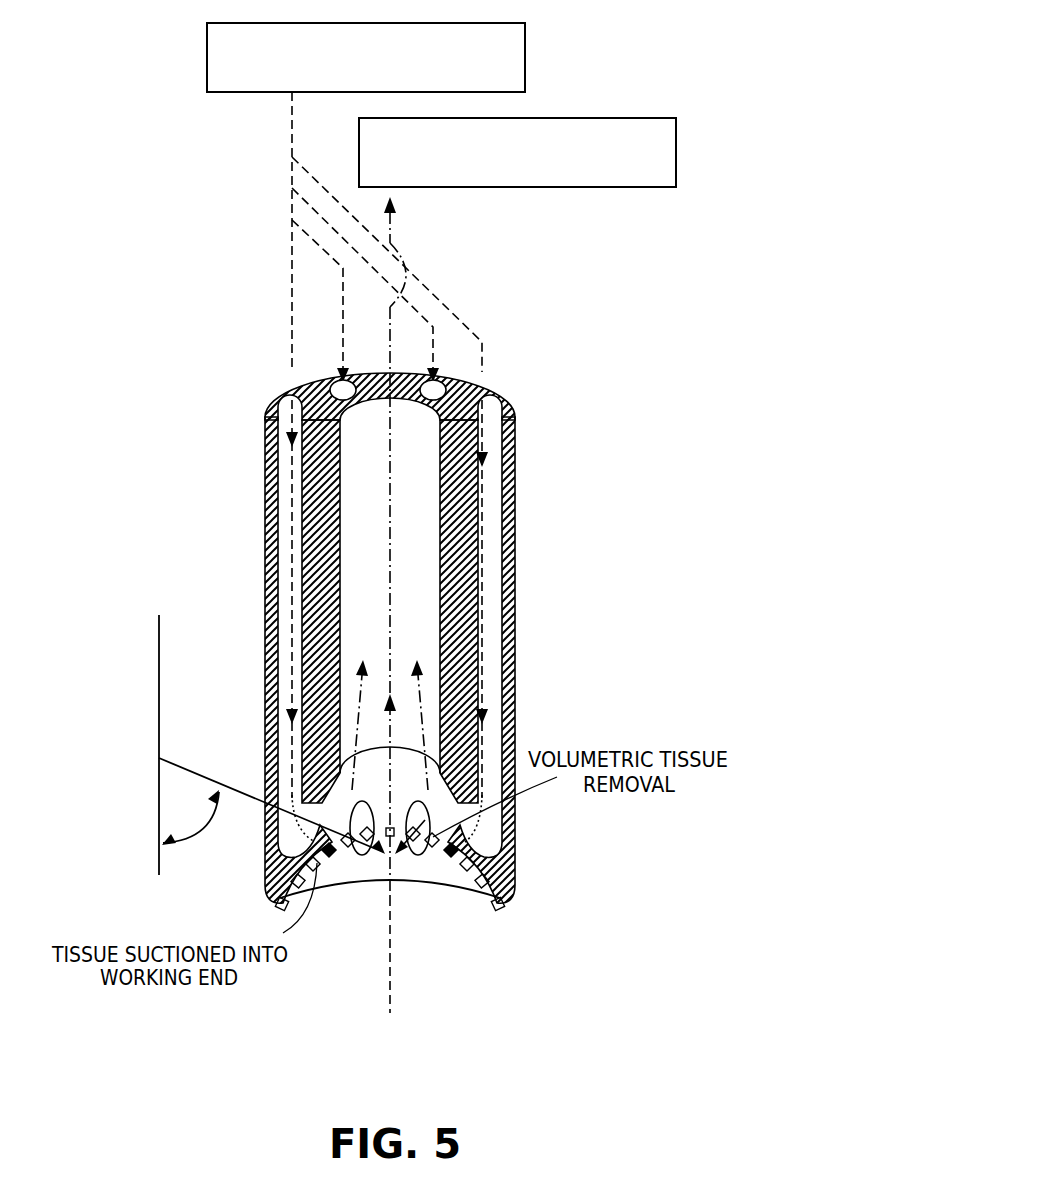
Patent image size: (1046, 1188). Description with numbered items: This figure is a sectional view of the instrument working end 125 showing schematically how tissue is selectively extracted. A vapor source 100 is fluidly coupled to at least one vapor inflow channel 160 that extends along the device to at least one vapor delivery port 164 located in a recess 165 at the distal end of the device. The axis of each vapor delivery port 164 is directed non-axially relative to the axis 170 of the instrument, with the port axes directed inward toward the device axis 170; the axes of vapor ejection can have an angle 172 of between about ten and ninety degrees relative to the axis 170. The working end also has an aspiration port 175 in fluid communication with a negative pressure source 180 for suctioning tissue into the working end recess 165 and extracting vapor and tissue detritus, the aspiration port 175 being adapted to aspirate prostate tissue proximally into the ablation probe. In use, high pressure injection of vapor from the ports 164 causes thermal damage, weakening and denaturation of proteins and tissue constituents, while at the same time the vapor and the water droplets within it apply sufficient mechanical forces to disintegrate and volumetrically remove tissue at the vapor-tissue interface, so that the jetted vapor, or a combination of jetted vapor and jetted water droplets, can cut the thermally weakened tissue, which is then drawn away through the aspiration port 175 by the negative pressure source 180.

The vapor source 100 is at (383, 81).
The negative pressure source 180 is at (533, 180).
The instrument working end 125 is at (437, 605).
The vapor inflow channel 160 is at (290, 465).
The aspiration port 175 is at (355, 572).
The angle 172 is at (272, 745).
The vapor delivery port 164 is at (420, 855).
The recess 165 is at (392, 870).
The axis 170 is at (393, 978).